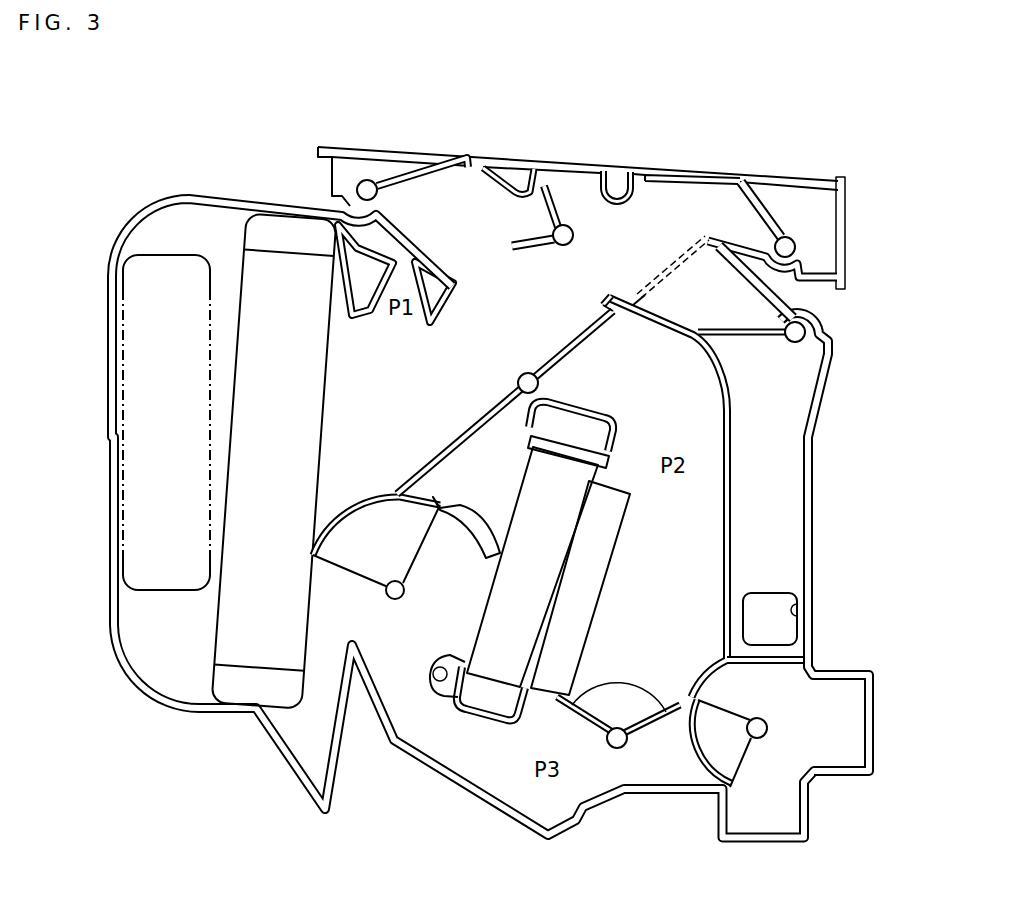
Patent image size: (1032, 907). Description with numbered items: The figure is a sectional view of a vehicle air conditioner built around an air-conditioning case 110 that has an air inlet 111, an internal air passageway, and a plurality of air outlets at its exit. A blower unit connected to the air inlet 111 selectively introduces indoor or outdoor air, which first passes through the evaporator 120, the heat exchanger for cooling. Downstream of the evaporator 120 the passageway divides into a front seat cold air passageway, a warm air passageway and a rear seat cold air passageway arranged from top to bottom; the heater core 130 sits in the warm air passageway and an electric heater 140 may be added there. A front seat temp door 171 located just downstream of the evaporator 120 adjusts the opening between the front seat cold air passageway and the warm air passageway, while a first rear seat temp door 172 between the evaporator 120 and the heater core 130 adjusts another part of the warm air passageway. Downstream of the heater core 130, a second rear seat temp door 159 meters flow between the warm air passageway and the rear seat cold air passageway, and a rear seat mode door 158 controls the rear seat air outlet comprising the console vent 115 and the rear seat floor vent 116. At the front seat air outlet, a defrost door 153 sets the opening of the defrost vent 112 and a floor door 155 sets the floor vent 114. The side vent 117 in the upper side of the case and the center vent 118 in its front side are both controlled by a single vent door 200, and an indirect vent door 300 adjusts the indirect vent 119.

The air-conditioning case 110 is at (218, 196).
The air inlet 111 is at (163, 590).
The defrost vent 112 is at (374, 166).
The floor vent 114 is at (796, 608).
The console vent 115 is at (852, 732).
The rear seat floor vent 116 is at (780, 826).
The side vent 117 is at (683, 178).
The center vent 118 is at (831, 237).
The indirect vent 119 is at (575, 172).
The evaporator 120 is at (247, 648).
The heater core 130 is at (493, 668).
The electric heater 140 is at (610, 520).
The defrost door 153 is at (428, 170).
The floor door 155 is at (743, 338).
The rear seat mode door 158 is at (693, 752).
The second rear seat temp door 159 is at (652, 735).
The front seat temp door 171 is at (437, 462).
The first rear seat temp door 172 is at (340, 512).
The vent door 200 is at (705, 184).
The indirect vent door 300 is at (527, 238).